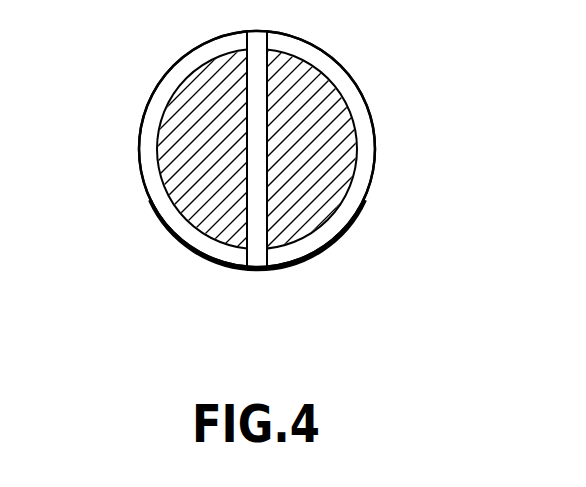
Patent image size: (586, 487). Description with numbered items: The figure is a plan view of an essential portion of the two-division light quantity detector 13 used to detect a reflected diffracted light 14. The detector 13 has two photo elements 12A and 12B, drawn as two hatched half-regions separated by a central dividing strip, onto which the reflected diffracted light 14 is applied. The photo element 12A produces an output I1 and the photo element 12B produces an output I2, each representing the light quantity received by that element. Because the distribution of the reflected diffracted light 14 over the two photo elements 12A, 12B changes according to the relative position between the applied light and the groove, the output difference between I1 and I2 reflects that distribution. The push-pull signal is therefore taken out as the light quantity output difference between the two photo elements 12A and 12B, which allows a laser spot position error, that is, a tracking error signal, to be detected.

The photo element 12A is at (158, 102).
The photo element 12B is at (343, 78).
The output from the photo element 12A I1 is at (168, 143).
The output from the photo element 12B I2 is at (343, 137).
The two-division light quantity detector 13 is at (279, 161).
The reflected diffracted light 14 is at (297, 228).